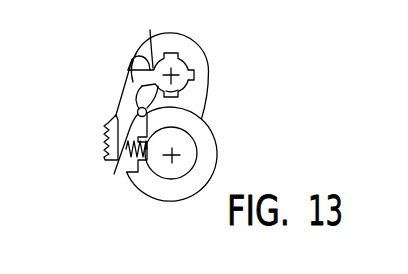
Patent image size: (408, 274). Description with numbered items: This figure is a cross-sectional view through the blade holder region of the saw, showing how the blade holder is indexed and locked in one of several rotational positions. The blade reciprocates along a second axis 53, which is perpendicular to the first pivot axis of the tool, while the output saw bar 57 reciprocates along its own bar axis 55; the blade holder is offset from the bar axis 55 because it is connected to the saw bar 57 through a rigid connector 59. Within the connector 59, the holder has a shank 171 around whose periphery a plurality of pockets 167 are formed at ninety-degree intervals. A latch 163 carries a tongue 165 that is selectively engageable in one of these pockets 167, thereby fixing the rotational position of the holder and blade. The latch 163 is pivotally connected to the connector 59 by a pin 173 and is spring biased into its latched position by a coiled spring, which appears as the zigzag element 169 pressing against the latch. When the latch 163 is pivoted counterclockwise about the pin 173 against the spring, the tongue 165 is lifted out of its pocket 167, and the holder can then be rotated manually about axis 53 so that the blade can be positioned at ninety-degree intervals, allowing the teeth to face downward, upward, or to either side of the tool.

The rigid connector 59 is at (227, 50).
The second axis 53 is at (188, 84).
The pockets 167 is at (186, 71).
The pin 173 is at (204, 116).
The output saw bar 57 is at (186, 151).
The bar axis 55 is at (174, 158).
The shank 171 is at (150, 30).
The tongue 165 is at (130, 61).
The latch 163 is at (118, 121).
The spring 169 is at (114, 174).